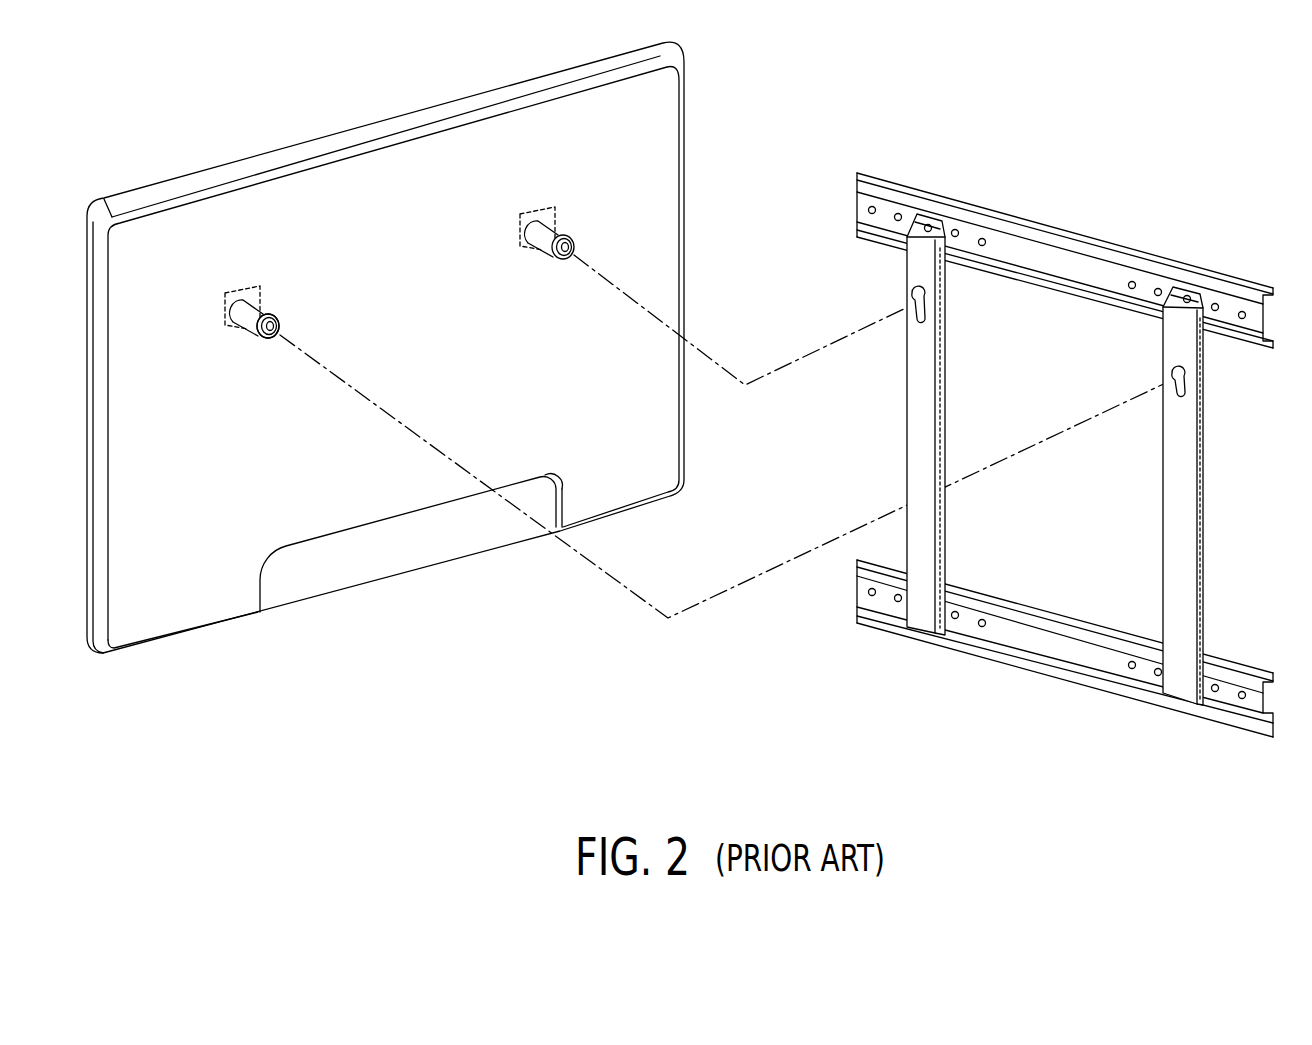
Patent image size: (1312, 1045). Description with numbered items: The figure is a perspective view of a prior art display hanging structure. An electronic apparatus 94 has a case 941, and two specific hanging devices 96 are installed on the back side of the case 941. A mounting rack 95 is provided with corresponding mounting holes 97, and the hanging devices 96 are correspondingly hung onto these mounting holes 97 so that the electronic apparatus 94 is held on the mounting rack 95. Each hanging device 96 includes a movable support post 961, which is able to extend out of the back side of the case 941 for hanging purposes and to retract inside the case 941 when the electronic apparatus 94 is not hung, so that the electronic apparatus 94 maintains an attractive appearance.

The electronic apparatus 94 is at (423, 339).
The case 941 is at (653, 175).
The mounting rack 95 is at (1044, 409).
The hanging device 96 is at (270, 290).
The movable support post 961 is at (277, 323).
The mounting hole 97 is at (912, 302).